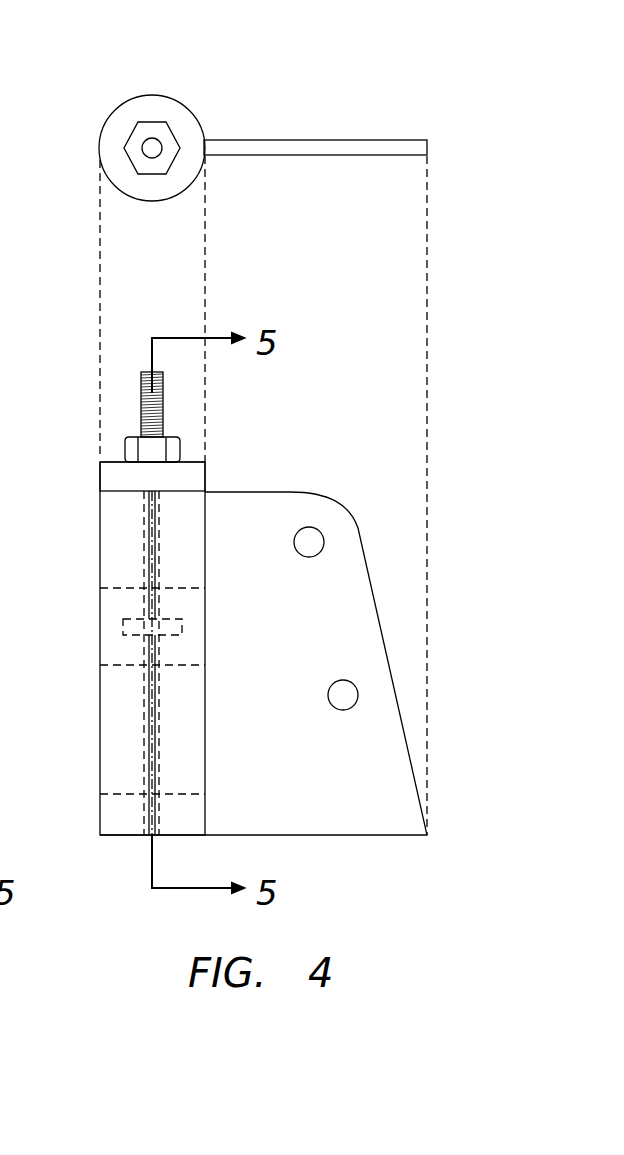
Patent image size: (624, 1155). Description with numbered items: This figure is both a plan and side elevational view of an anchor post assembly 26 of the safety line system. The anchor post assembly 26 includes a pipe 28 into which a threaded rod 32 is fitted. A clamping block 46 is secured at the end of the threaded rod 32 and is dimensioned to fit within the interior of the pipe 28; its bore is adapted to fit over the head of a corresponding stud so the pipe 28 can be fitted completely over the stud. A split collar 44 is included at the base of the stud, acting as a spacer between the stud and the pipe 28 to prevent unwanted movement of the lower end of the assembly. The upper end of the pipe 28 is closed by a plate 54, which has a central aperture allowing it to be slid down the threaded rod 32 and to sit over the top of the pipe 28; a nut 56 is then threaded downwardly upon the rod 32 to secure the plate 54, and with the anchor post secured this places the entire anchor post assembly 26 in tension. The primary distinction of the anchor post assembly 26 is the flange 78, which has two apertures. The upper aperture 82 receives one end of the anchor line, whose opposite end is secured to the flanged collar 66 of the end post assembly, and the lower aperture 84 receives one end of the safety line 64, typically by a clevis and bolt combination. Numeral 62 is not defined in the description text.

The anchor post assembly 26 is at (330, 352).
The pipe 28 is at (100, 688).
The threaded rod 32 is at (160, 411).
The split collar 44 is at (110, 813).
The clamping block 46 is at (110, 598).
The plate 54 is at (137, 104).
The nut 56 is at (172, 128).
The axle 62 is at (6, 128).
The safety line 64 is at (20, 323).
The flanged collar 66 is at (15, 63).
The flange 78 is at (350, 148).
The upper aperture 82 is at (325, 541).
The lower aperture 84 is at (358, 694).